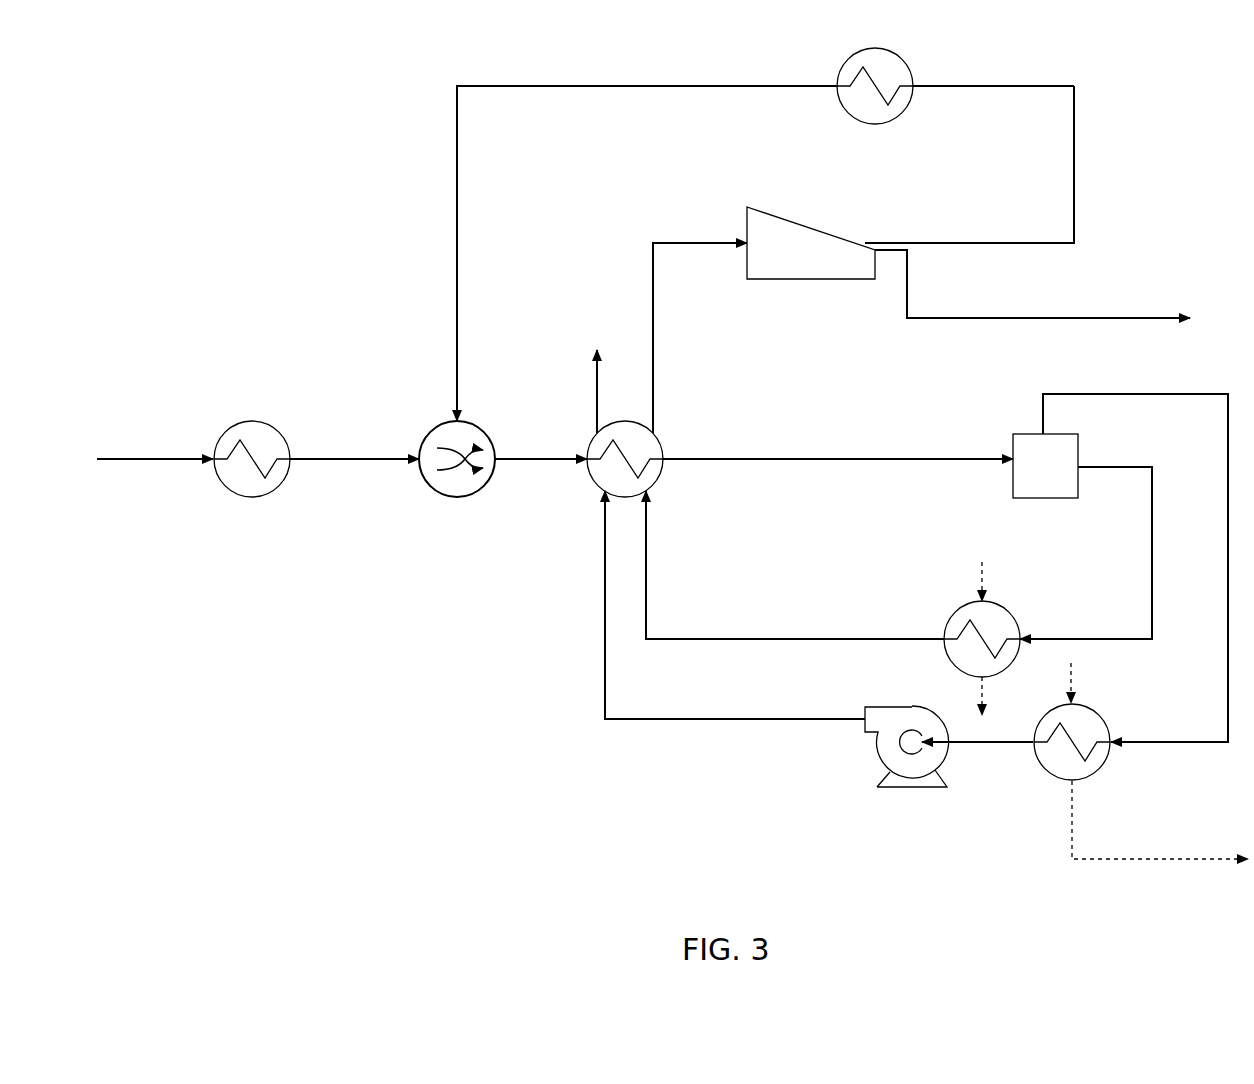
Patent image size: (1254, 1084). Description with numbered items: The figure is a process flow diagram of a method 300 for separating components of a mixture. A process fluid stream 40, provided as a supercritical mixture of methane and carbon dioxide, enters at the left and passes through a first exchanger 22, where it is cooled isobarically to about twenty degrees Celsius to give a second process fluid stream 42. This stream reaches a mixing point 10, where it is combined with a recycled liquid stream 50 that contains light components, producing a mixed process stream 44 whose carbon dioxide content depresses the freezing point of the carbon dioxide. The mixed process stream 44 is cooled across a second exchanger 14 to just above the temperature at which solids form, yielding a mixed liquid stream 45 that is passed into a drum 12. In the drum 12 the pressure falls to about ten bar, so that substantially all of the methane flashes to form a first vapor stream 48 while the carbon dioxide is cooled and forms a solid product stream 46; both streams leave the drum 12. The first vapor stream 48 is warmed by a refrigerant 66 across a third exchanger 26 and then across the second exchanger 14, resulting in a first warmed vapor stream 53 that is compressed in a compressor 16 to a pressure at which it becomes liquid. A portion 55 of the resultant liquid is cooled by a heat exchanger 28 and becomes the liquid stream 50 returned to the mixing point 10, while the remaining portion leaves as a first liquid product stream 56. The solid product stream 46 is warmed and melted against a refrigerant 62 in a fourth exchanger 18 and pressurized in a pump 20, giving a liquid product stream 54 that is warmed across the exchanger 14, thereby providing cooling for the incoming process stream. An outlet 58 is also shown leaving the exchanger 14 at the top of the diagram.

The method for separating components 300 is at (187, 122).
The mixer 10 is at (430, 432).
The drum 12 is at (1013, 434).
The second exchanger 14 is at (657, 441).
The compressor 16 is at (836, 232).
The fourth exchanger 18 is at (1103, 768).
The pump 20 is at (884, 777).
The first exchanger 22 is at (252, 421).
The third exchanger 26 is at (1012, 612).
The heat exchanger 28 is at (905, 112).
The process fluid stream 40 is at (155, 441).
The second process fluid stream 42 is at (354, 441).
The mixed process stream 44 is at (541, 440).
The mixed liquid stream 45 is at (838, 442).
The solid product stream 46 is at (1135, 552).
The first vapor stream 48 is at (1086, 535).
The liquid stream 50 is at (765, 236).
The first warmed vapor stream 53 is at (700, 320).
The liquid product stream 54 is at (735, 605).
The portion of the resultant liquid 55 is at (969, 164).
The first liquid product stream 56 is at (1054, 293).
The vent stream 58 is at (597, 373).
The refrigerant 62 is at (1051, 680).
The refrigerant 66 is at (981, 566).